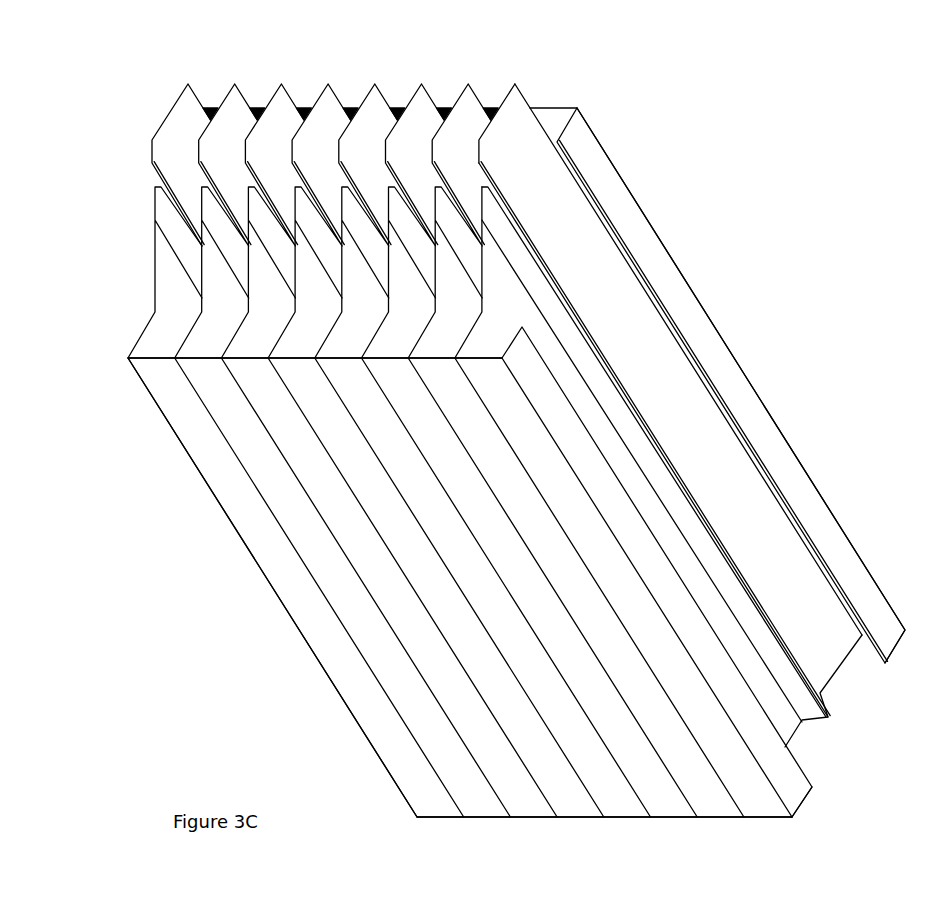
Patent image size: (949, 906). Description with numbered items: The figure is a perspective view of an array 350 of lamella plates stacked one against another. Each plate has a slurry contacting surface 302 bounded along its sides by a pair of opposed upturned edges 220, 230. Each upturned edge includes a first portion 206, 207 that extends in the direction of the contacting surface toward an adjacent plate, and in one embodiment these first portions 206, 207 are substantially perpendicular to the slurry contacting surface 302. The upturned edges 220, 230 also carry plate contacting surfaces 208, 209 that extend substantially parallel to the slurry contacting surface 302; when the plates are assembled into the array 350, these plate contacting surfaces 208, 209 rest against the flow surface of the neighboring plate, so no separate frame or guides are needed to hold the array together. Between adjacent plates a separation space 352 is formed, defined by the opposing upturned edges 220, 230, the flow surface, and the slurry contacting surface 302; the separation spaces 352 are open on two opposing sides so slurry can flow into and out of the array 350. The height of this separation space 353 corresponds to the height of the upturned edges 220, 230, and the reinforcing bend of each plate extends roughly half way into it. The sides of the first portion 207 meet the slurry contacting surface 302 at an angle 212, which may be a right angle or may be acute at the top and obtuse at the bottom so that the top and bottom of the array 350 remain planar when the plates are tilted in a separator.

The array of lamella plates 350 is at (453, 413).
The separation space 352 is at (168, 262).
The separation space 353 is at (200, 127).
The slurry contacting surface 302 is at (645, 351).
The first portion 206 is at (547, 107).
The upturned edge 230 is at (731, 385).
The plate contacting surface 209 is at (663, 268).
The upturned edge 220 is at (691, 572).
The plate contacting surface 208 is at (812, 788).
The first portion 207 is at (766, 810).
The angle 212 is at (151, 364).